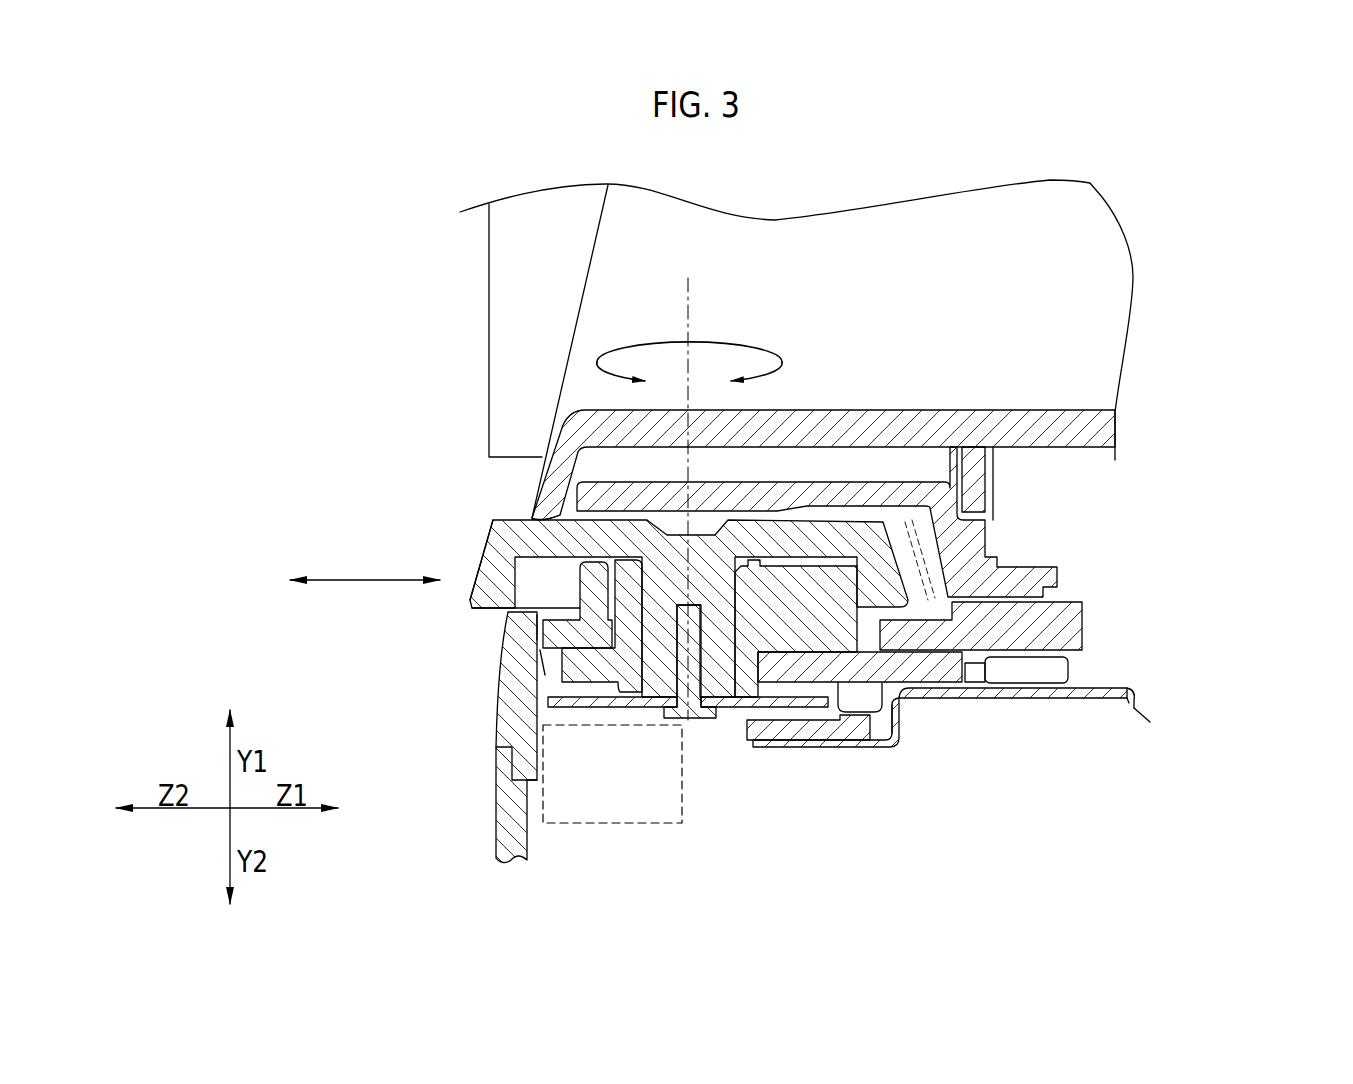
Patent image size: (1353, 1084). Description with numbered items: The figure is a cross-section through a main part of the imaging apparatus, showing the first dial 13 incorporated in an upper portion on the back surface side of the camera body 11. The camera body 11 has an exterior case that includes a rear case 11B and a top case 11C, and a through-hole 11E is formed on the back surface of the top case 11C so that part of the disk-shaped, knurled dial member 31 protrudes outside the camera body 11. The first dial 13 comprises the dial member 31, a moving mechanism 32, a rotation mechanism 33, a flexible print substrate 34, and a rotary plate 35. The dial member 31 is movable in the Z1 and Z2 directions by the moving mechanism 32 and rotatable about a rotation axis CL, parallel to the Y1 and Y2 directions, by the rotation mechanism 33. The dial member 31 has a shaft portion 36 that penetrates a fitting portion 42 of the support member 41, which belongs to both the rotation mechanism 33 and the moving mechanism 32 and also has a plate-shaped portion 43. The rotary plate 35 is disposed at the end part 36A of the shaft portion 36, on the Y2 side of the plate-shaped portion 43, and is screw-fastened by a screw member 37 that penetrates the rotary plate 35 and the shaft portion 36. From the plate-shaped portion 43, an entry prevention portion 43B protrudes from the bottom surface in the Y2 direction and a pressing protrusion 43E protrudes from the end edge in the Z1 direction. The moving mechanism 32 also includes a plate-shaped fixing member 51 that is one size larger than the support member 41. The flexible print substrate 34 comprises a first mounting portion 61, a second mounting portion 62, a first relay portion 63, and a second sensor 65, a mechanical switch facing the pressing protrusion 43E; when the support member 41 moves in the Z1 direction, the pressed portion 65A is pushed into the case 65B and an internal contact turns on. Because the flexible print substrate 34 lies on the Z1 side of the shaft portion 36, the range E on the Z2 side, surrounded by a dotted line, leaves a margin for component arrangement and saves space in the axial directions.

The camera body 11 is at (476, 340).
The rear case 11B is at (496, 836).
The top case 11C is at (845, 412).
The through-hole 11E is at (538, 520).
The first dial 13 is at (449, 548).
The dial member 31 is at (487, 605).
The moving mechanism 32 is at (533, 637).
The rotation mechanism 33 is at (548, 670).
The flexible print substrate 34 is at (1152, 723).
The rotary plate 35 is at (597, 705).
The shaft portion 36 is at (647, 707).
The end part 36A is at (746, 690).
The screw member 37 is at (673, 722).
The support member 41 is at (568, 684).
The fitting portion 42 is at (806, 570).
The plate-shaped portion 43 is at (990, 758).
The entry prevention portion 43B is at (863, 718).
The pressing protrusion 43E is at (930, 676).
The fixing member 51 is at (1001, 603).
The first mounting portion 61 is at (834, 750).
The second mounting portion 62 is at (1133, 690).
The first relay portion 63 is at (900, 748).
The second sensor 65 is at (1073, 693).
The pressed portion 65A is at (968, 676).
The case 65B is at (1008, 676).
The rotation axis CL is at (690, 318).
The range E is at (610, 826).